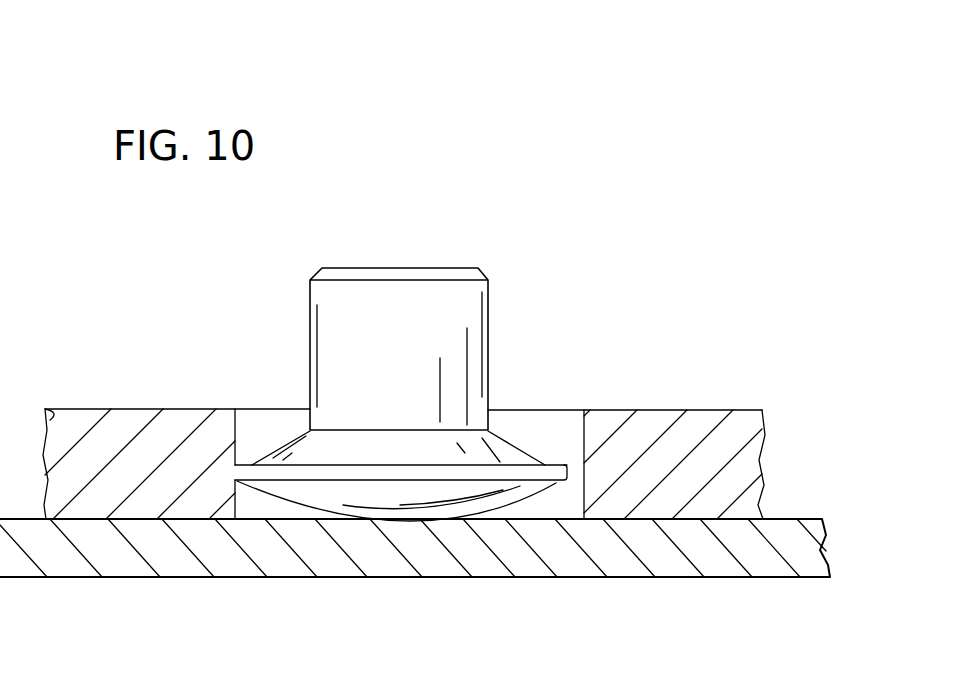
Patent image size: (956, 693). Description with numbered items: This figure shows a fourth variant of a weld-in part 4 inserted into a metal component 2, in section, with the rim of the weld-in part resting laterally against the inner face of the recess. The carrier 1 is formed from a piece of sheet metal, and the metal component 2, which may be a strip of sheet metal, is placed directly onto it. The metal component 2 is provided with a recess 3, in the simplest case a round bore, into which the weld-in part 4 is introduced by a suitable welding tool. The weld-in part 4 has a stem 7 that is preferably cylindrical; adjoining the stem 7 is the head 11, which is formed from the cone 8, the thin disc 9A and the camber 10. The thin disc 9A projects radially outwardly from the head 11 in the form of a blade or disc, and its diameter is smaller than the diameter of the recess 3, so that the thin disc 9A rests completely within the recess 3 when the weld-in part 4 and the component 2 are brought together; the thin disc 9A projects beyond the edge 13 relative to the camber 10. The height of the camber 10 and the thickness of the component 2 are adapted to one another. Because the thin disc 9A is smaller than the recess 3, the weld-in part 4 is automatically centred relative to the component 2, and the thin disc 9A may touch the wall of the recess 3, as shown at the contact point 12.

The carrier 1 is at (758, 565).
The metal component 2 is at (690, 418).
The recess 3 is at (584, 432).
The weld-in part 4 is at (395, 267).
The stem 7 is at (330, 322).
The cone 8 is at (517, 448).
The thin disc 9A is at (570, 483).
The camber 10 is at (308, 505).
The head 11 is at (297, 430).
The contact point 12 is at (242, 483).
The edge 13 is at (552, 483).